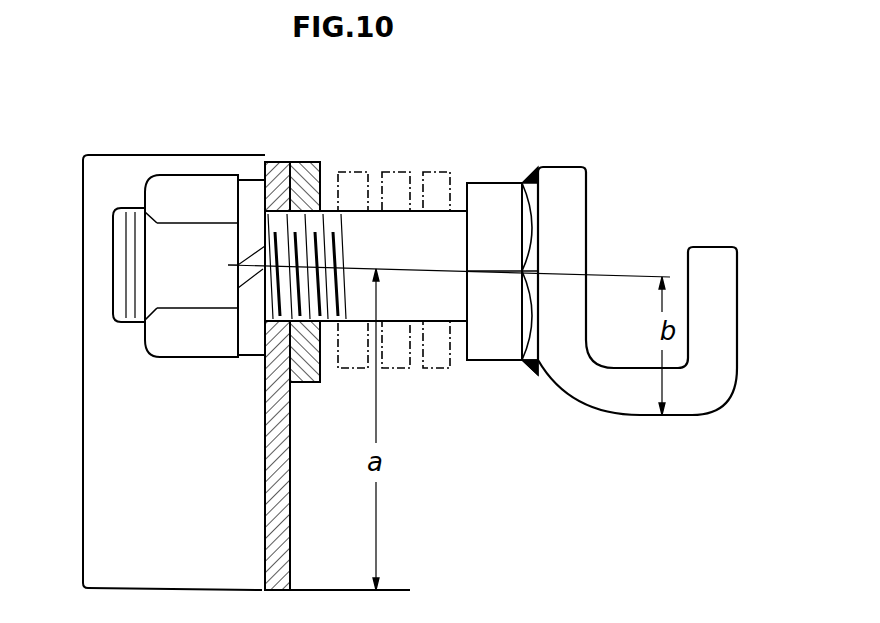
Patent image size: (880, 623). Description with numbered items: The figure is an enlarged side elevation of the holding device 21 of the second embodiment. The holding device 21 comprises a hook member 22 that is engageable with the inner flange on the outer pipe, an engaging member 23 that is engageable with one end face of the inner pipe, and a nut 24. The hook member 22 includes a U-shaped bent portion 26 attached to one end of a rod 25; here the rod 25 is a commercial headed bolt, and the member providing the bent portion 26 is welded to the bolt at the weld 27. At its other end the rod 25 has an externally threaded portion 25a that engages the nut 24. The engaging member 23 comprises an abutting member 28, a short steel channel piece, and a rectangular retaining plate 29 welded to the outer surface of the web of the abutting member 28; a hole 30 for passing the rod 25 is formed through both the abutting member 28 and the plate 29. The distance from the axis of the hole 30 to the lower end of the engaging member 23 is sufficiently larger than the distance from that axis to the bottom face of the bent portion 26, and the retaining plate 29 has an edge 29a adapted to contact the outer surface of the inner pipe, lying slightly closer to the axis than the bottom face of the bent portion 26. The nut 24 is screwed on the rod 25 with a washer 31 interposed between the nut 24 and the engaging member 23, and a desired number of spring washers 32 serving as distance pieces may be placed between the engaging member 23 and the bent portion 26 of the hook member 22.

The holding device 21 is at (475, 163).
The hook member 22 is at (570, 218).
The engaging member 23 is at (112, 449).
The nut 24 is at (196, 200).
The rod 25 is at (400, 310).
The externally threaded portion 25a is at (113, 263).
The bent portion 26 is at (737, 312).
The weld 27 is at (530, 365).
The abutting member 28 is at (283, 515).
The retaining plate 29 is at (305, 162).
The edge 29a is at (300, 385).
The hole 30 is at (282, 162).
The washer 31 is at (238, 355).
The spring washers 32 is at (425, 178).